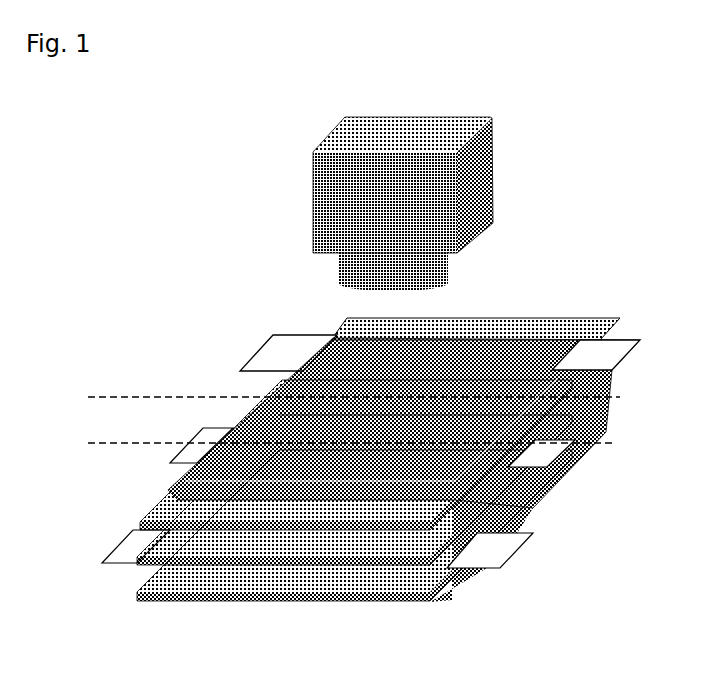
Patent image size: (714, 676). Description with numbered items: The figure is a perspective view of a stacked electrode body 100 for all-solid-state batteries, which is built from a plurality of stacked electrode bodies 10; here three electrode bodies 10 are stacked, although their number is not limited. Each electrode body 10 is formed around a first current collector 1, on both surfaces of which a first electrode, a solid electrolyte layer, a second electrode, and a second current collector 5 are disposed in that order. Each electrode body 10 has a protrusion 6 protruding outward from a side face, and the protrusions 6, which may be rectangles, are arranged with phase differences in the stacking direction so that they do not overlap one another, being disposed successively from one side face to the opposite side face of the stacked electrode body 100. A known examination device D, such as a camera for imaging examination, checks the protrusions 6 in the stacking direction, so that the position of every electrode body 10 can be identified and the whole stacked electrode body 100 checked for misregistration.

The stacked electrode body 100 is at (333, 450).
The examination device D is at (492, 120).
The second current collector 5 is at (570, 320).
The protrusion 6 is at (278, 335).
The electrode body 10 is at (316, 515).
The first current collector 1 is at (172, 603).